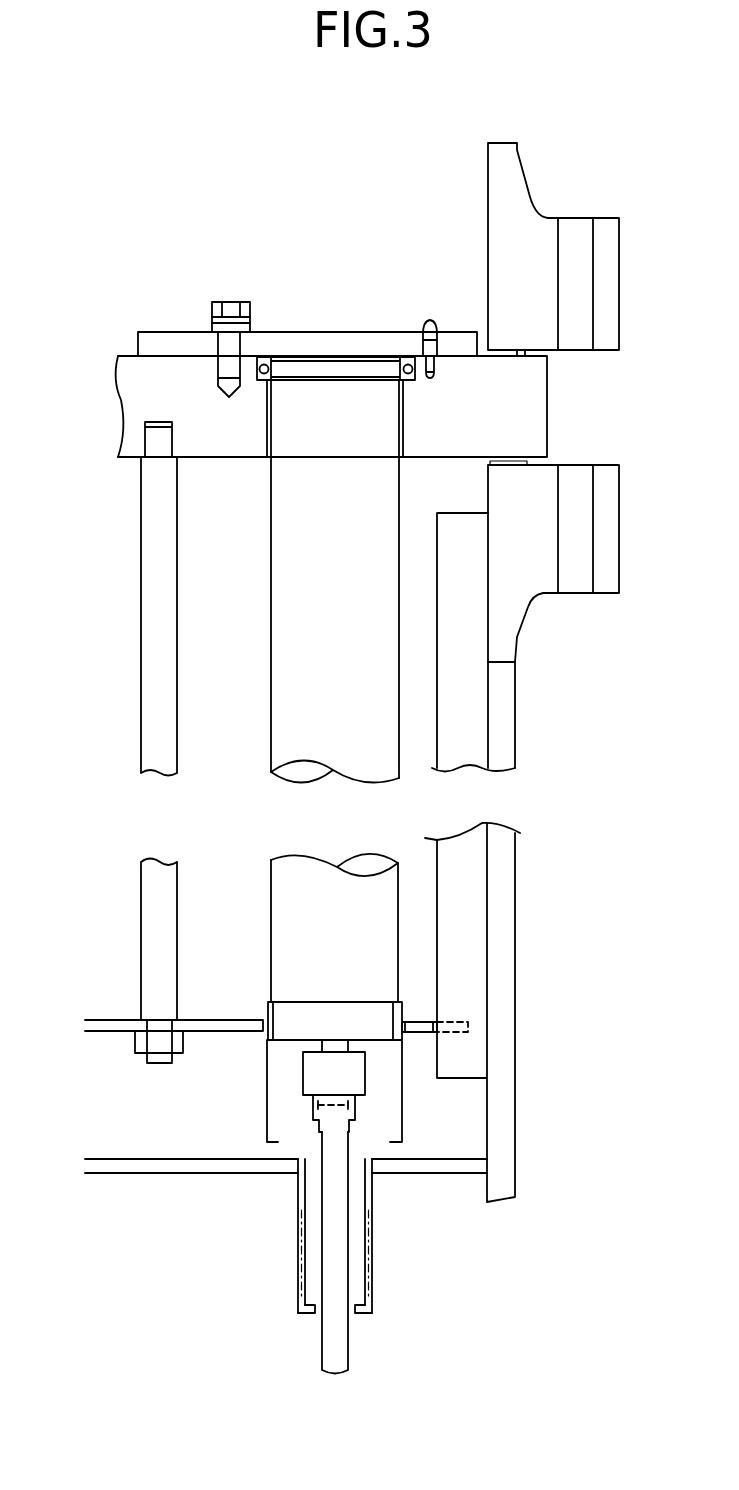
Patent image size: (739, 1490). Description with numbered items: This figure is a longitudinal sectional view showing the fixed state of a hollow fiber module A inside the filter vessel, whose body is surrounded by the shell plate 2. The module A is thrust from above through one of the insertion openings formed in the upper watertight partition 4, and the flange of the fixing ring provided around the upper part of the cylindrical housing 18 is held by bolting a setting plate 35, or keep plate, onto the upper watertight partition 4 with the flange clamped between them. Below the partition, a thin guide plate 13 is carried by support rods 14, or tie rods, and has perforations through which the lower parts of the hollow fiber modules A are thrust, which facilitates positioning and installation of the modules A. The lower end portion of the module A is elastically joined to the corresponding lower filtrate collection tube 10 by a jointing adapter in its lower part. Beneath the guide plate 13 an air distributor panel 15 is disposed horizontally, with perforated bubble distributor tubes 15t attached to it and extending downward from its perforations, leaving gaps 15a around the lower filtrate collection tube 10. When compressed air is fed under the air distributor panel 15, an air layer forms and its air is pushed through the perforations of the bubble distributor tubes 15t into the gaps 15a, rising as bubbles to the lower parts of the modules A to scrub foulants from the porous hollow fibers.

The shell plate 2 is at (507, 726).
The upper watertight partition 4 is at (545, 421).
The lower filtrate collection tube 10 is at (343, 1273).
The guide plate 13 is at (95, 1020).
The support rod 14 is at (140, 678).
The air distributor panel 15 is at (123, 1167).
The perforated bubble distributor tube 15t is at (298, 1208).
The gap 15a is at (310, 1277).
The cylindrical housing 18 is at (270, 697).
The setting plate 35 is at (161, 332).
The hollow fiber module A is at (267, 653).